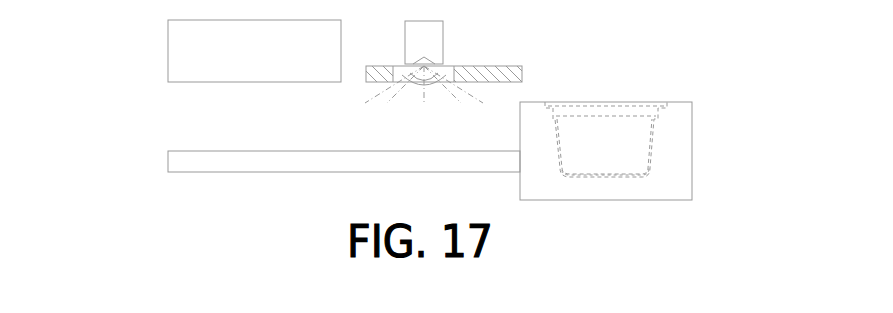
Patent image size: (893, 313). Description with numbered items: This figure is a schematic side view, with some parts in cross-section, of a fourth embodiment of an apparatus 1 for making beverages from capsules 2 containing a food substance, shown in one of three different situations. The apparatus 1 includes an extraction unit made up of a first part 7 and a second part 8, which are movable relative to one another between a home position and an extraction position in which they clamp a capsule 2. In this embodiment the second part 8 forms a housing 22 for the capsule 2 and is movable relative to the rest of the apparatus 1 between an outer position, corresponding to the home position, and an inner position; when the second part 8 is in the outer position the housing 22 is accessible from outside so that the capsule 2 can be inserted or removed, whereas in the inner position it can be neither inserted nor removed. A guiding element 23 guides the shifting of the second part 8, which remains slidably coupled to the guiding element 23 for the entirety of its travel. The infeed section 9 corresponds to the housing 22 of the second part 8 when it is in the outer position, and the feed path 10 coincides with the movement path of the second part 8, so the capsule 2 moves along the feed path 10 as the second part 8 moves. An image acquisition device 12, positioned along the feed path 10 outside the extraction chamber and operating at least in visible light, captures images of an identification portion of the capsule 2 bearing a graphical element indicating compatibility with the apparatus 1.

The apparatus for making beverages 1 is at (118, 142).
The capsule 2 is at (618, 148).
The first part 7 is at (210, 51).
The second part 8 is at (618, 193).
The infeed section 9 is at (670, 73).
The feed path 10 is at (520, 213).
The image acquisition device 12 is at (422, 43).
The housing 22 is at (627, 165).
The guiding element 23 is at (328, 162).